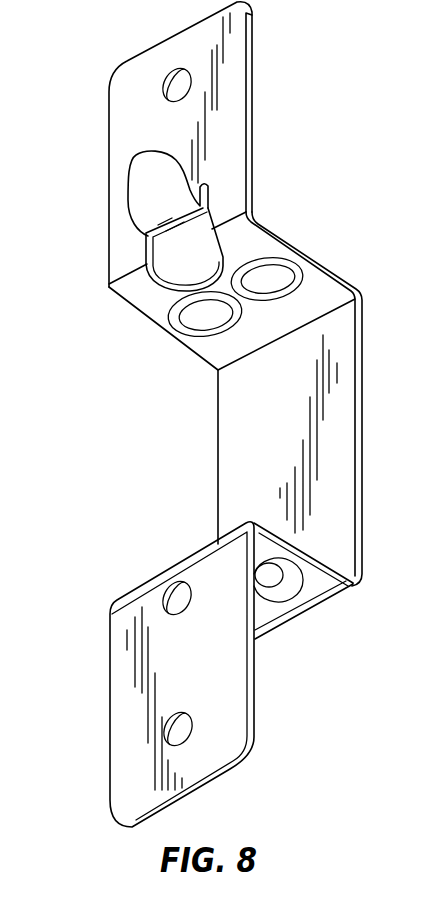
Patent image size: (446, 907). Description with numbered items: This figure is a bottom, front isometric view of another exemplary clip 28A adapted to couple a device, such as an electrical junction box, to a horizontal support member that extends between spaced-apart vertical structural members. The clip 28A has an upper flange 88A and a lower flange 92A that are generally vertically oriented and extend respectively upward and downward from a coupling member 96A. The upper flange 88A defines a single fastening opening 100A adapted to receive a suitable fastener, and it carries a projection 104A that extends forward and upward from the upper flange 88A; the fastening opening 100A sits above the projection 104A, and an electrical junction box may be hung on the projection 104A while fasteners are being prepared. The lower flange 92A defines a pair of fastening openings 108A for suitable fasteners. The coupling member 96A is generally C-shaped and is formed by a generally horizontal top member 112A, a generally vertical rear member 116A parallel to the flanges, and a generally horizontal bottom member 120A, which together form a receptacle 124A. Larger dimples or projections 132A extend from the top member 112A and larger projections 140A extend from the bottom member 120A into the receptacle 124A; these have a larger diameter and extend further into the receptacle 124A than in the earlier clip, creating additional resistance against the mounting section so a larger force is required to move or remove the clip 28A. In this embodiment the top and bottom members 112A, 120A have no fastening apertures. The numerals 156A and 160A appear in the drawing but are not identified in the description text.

The clip 28A is at (347, 106).
The upper flange 88A is at (108, 121).
The fastening opening 100A is at (190, 82).
The tab 156A is at (152, 150).
The projection 104A is at (145, 184).
The coupling member 96A is at (370, 343).
The top member 112A is at (329, 258).
The projections 132A is at (278, 278).
The rear member 116A is at (331, 427).
The receptacle 124A is at (180, 441).
The bottom member 120A is at (318, 563).
The projections 140A is at (276, 578).
The lower flange 92A is at (264, 672).
The lower mounting plate 160A is at (130, 680).
The fastening openings 108A is at (171, 601).